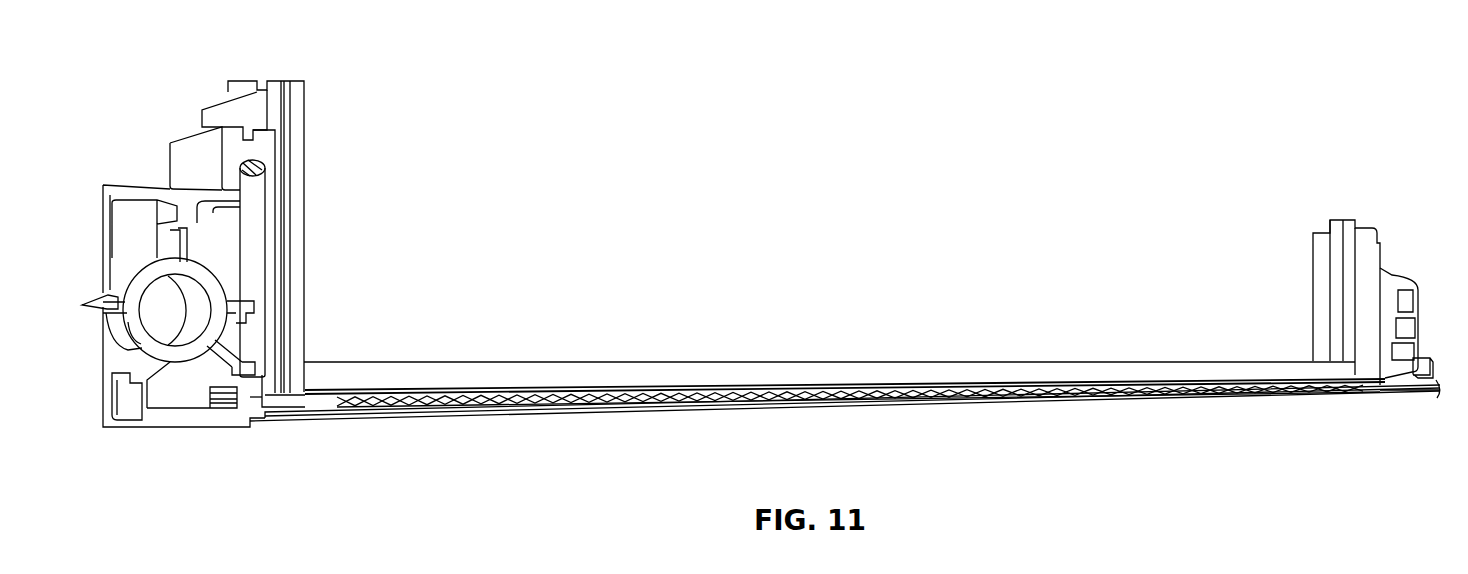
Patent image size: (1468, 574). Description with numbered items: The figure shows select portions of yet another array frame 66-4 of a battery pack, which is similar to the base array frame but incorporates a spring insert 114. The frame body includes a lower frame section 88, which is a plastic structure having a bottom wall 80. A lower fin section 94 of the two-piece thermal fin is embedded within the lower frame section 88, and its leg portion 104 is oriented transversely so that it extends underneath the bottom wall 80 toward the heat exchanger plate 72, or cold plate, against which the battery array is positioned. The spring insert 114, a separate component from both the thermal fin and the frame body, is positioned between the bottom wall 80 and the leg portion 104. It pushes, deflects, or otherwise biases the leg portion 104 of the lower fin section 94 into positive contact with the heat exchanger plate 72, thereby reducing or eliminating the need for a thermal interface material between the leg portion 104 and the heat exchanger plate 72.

The array frame 66-4 is at (258, 62).
The lower frame section 88 is at (240, 172).
The spring insert 114 is at (562, 392).
The bottom wall 80 is at (882, 380).
The lower fin section 94 is at (945, 388).
The leg portion 104 is at (947, 405).
The heat exchanger plate 72 is at (268, 422).